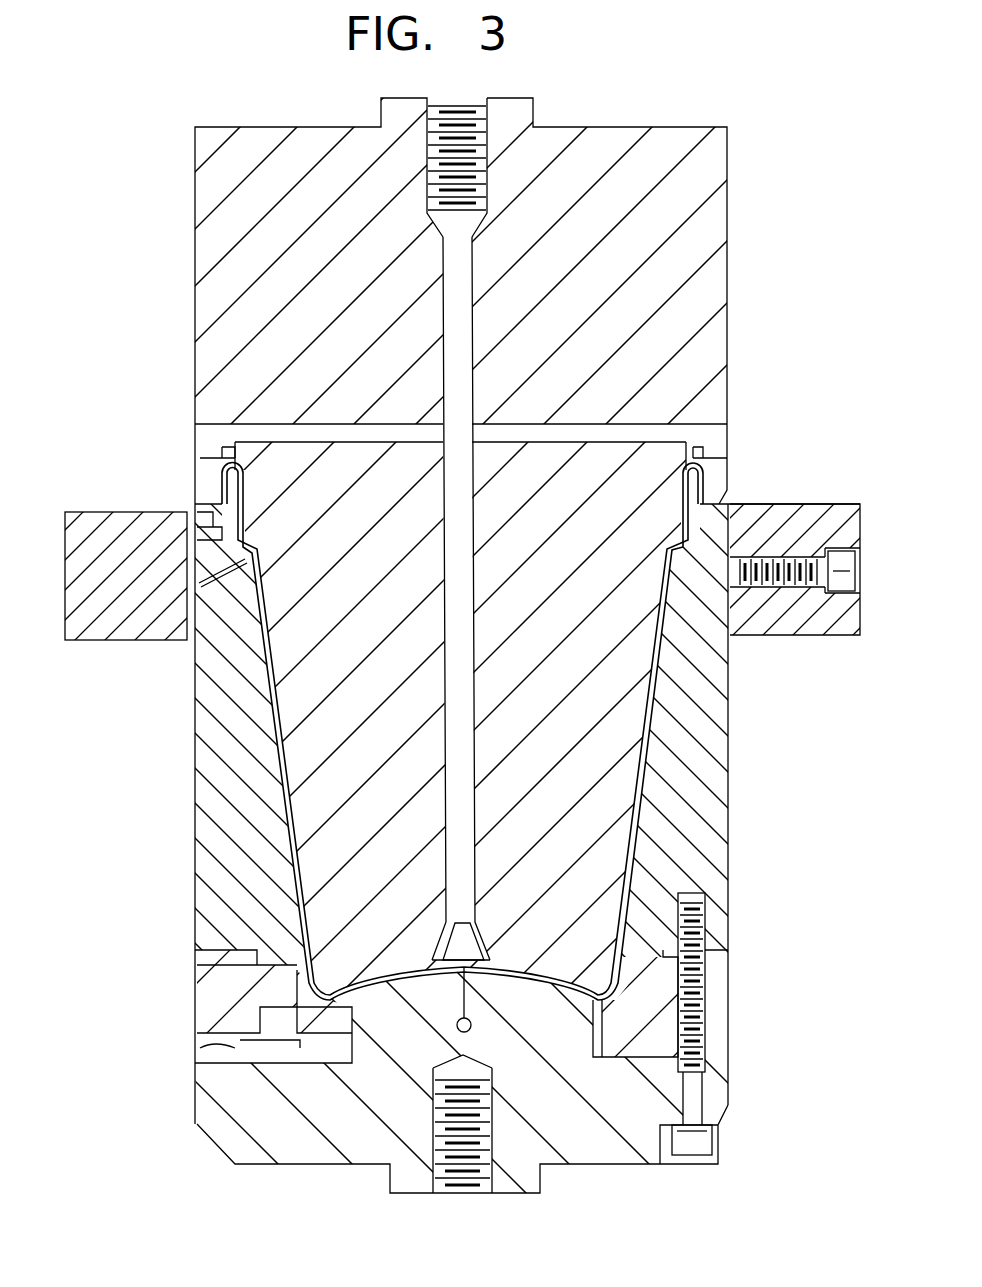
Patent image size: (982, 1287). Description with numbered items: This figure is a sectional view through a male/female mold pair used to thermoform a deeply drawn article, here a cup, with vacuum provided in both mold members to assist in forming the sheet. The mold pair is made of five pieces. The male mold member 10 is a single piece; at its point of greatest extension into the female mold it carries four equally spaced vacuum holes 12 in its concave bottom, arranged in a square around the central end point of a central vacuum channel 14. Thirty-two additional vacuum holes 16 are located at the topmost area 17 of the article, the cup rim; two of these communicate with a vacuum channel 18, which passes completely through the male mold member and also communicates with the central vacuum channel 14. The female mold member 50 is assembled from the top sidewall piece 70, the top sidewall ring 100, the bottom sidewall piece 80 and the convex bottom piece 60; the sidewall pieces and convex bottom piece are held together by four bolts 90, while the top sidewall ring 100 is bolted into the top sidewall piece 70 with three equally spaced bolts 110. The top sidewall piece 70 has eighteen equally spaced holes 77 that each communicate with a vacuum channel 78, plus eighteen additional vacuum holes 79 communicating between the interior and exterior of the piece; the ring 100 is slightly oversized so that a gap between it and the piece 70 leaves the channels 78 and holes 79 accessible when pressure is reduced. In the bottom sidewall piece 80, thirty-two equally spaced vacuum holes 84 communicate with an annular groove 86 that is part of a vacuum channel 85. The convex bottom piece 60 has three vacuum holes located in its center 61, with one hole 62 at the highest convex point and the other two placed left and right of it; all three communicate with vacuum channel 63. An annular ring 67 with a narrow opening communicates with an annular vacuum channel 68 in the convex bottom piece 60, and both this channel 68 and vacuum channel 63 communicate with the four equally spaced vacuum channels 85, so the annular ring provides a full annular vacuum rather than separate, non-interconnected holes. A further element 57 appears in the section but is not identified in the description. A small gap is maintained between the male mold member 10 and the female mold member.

The male mold member 10 is at (657, 127).
The vacuum holes 12 is at (440, 932).
The central vacuum channel 14 is at (470, 690).
The vacuum holes 16 is at (225, 460).
The topmost area 17 is at (220, 478).
The vacuum channel 18 is at (680, 428).
The female mold member 50 is at (730, 795).
The spacer 57 is at (345, 1007).
The convex bottom piece 60 is at (580, 1138).
The center of the convex bottom 61 is at (462, 972).
The vacuum hole 62 is at (205, 965).
The vacuum channel 63 is at (468, 1032).
The annular ring 67 is at (595, 1018).
The annular vacuum channel 68 is at (601, 1058).
The top sidewall piece 70 is at (690, 860).
The holes 77 is at (205, 522).
The vacuum channel 78 is at (190, 532).
The vacuum holes 79 is at (215, 590).
The bottom sidewall piece 80 is at (708, 998).
The vacuum holes 84 is at (303, 1000).
The vacuum channel 85 is at (265, 1022).
The annular groove 86 is at (222, 1042).
The bolts 90 is at (714, 1040).
The top sidewall ring 100 is at (774, 613).
The bolts 110 is at (814, 578).